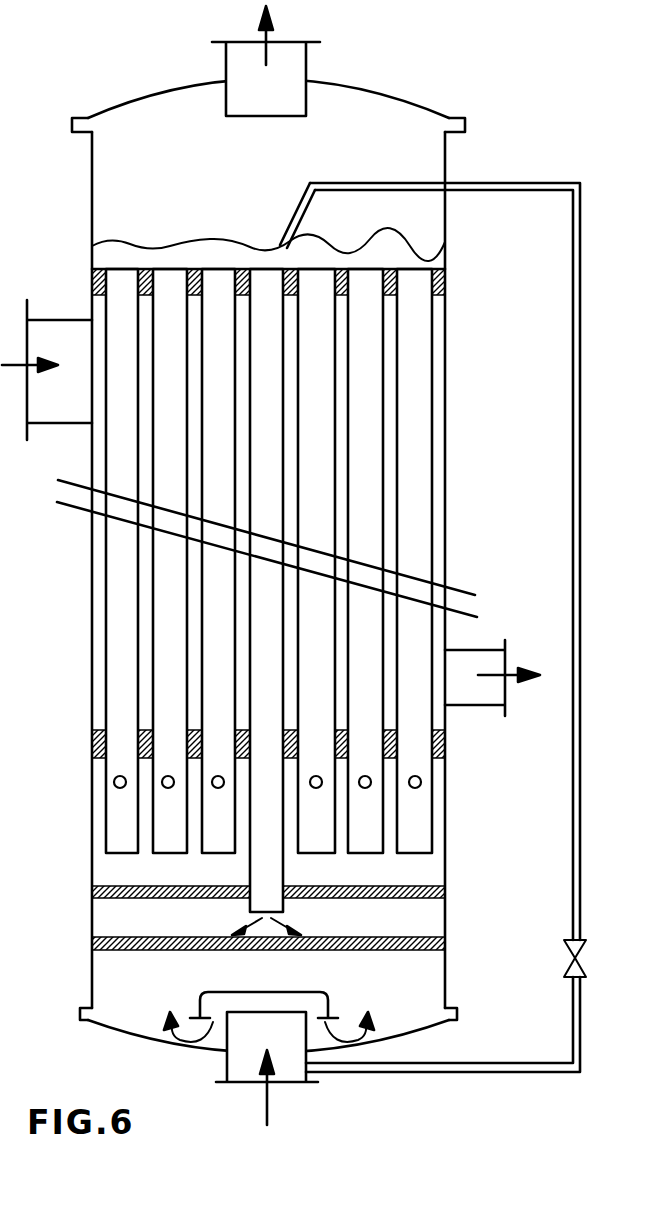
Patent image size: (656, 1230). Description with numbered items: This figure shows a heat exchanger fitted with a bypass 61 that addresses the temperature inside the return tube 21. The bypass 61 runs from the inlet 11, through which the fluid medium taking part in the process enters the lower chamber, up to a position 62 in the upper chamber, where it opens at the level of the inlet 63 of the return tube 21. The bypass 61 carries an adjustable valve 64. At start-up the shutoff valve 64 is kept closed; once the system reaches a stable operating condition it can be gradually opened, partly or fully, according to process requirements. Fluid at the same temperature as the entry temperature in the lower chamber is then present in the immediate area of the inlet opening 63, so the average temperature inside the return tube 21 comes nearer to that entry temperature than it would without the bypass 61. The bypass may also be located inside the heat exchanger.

The inlet 11 is at (288, 1063).
The return tube 21 is at (268, 410).
The bypass 61 is at (571, 576).
The position 62 is at (270, 268).
The inlet of the return tube 63 is at (270, 285).
The adjustable valve 64 is at (567, 957).